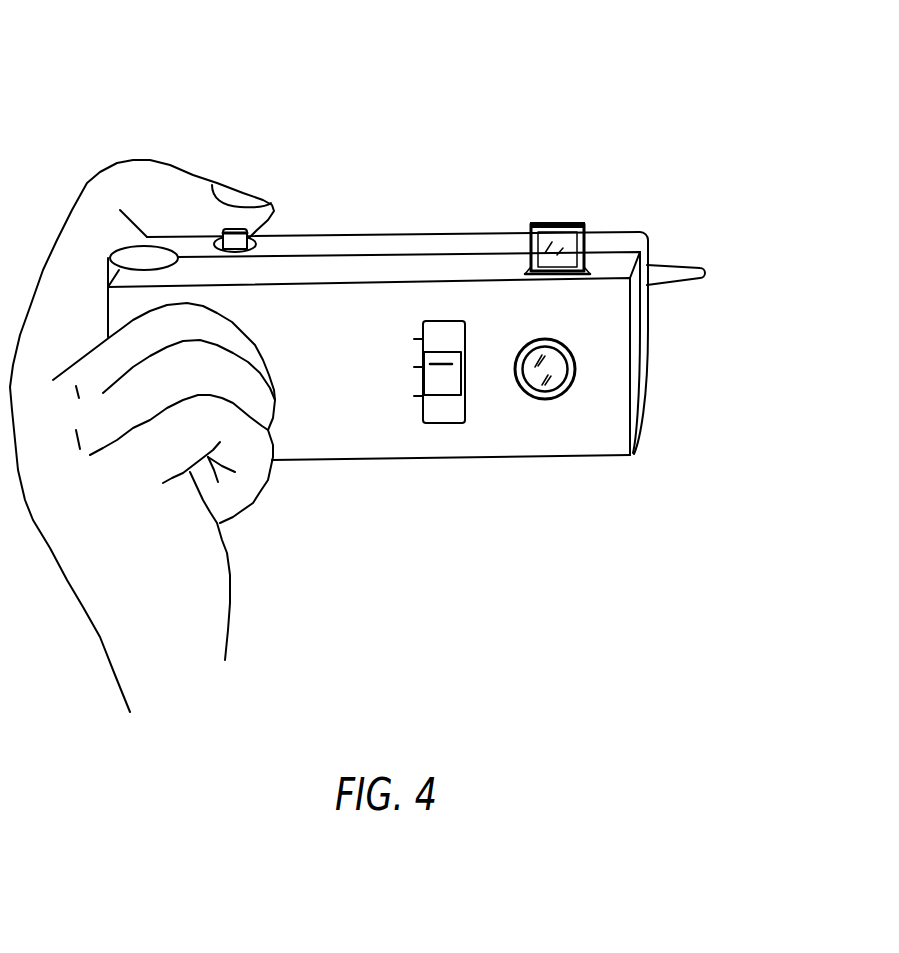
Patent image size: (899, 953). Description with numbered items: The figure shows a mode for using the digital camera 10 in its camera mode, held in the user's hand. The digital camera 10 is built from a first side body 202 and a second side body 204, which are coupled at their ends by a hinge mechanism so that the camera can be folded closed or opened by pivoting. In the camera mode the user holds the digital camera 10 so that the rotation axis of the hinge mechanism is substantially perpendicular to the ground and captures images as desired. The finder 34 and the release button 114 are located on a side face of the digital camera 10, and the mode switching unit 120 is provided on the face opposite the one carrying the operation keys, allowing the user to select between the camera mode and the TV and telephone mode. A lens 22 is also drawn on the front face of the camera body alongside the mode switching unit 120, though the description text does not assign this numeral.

The digital camera 10 is at (203, 40).
The photographing lens 22 is at (550, 358).
The finder 34 is at (564, 245).
The release button 114 is at (257, 245).
The mode switching unit 120 is at (442, 383).
The first side body 202 is at (622, 240).
The second side body 204 is at (603, 438).